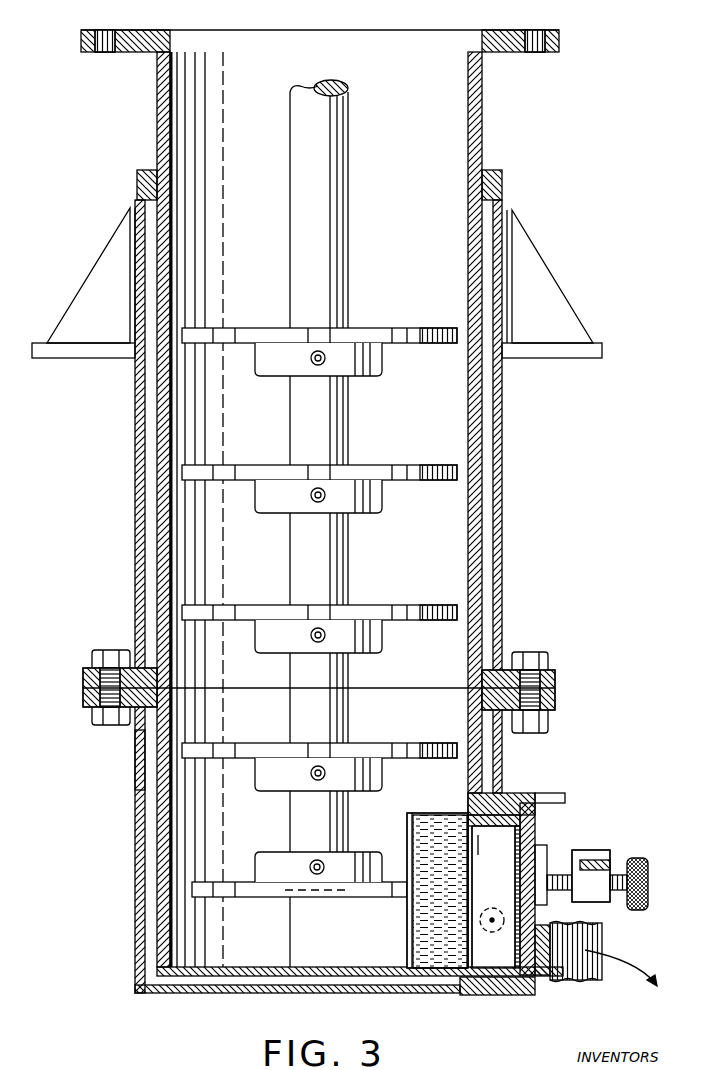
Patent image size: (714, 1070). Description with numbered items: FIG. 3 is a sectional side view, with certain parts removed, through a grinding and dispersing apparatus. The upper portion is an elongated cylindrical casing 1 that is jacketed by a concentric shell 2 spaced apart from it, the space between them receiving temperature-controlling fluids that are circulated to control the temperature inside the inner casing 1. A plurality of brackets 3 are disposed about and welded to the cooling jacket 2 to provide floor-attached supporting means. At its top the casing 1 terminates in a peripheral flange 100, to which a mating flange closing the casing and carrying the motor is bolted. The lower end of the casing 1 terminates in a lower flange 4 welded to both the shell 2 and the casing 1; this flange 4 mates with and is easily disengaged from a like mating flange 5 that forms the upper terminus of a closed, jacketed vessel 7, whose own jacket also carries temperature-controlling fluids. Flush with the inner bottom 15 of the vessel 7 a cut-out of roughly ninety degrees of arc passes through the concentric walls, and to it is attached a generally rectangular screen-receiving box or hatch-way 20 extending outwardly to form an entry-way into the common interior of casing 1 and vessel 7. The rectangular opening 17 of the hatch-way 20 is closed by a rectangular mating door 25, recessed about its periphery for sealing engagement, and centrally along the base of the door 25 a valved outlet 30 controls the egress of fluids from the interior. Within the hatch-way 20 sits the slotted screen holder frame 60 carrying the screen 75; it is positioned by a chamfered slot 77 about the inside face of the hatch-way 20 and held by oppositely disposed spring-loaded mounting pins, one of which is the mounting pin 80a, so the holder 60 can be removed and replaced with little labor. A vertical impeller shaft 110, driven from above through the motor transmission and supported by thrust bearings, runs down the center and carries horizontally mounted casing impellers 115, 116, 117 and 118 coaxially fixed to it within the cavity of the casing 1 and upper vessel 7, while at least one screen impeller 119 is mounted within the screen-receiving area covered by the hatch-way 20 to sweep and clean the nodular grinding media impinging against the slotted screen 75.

The peripheral flange 100 is at (412, 108).
The elongated cylindrical casing 1 is at (482, 136).
The concentric shell 2 is at (502, 449).
The brackets 3 is at (88, 282).
The lower flange 4 is at (91, 665).
The mating flange 5 is at (80, 697).
The jacketed vessel 7 is at (135, 782).
The inner bottom 15 is at (270, 966).
The rectangular opening 17 is at (525, 797).
The screen-receiving box or hatch-way 20 is at (522, 790).
The mating door 25 is at (536, 812).
The valved outlet 30 is at (590, 924).
The slotted screen holder frame 60 is at (477, 840).
The screen 75 is at (407, 845).
The chamfered slot 77 is at (482, 830).
The mounting pin 80a is at (490, 912).
The vertical impeller shaft 110 is at (290, 224).
The casing impeller 115 is at (363, 329).
The casing impeller 116 is at (365, 464).
The casing impeller 117 is at (367, 604).
The casing impeller 118 is at (364, 743).
The screen impeller 119 is at (238, 881).